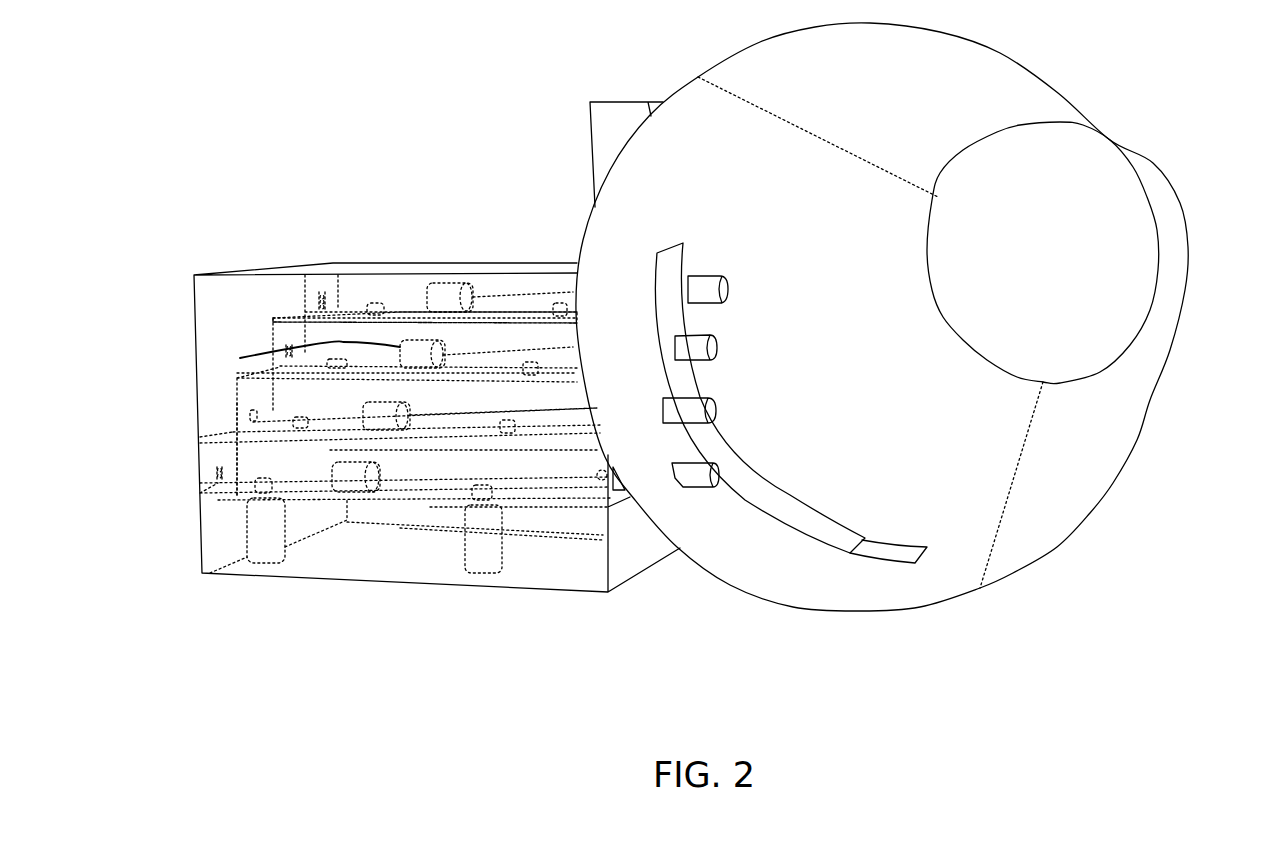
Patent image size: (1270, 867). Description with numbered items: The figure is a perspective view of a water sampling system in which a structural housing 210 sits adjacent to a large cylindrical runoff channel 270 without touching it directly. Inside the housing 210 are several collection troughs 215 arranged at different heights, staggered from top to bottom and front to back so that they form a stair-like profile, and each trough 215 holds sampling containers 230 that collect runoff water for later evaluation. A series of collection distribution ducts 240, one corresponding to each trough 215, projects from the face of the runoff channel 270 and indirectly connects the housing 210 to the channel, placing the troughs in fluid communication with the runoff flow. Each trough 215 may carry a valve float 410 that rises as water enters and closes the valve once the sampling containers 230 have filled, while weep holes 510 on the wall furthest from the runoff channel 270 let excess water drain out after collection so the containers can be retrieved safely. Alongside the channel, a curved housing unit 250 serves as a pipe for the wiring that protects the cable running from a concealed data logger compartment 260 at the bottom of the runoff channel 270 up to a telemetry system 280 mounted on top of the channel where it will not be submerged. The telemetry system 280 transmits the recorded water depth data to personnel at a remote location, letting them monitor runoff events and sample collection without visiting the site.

The structural housing 210 is at (265, 272).
The trough 215 is at (270, 329).
The sampling container 230 is at (260, 528).
The collection distribution duct 240 is at (707, 480).
The housing unit 250 is at (805, 523).
The data logger compartment 260 is at (883, 552).
The runoff channel 270 is at (1122, 441).
The telemetry system 280 is at (618, 101).
The valve float 410 is at (240, 358).
The weep hole 510 is at (237, 403).